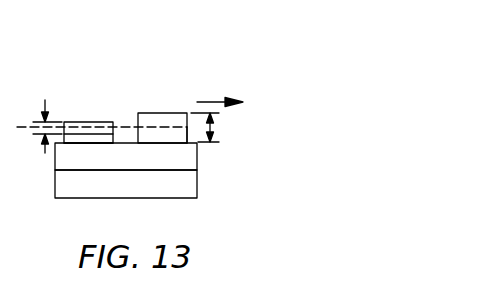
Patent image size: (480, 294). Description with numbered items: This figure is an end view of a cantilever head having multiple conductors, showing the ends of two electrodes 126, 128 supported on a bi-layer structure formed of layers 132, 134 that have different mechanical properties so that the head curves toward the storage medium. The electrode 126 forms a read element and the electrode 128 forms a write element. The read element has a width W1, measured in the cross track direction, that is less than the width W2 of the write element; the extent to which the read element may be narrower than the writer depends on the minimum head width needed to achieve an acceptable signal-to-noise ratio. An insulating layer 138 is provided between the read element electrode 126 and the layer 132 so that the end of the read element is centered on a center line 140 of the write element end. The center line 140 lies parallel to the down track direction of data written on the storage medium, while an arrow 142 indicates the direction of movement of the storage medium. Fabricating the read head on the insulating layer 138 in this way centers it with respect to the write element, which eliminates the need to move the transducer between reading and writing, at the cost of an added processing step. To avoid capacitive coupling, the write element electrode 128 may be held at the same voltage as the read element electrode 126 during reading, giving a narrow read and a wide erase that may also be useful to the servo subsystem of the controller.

The electrode 126 is at (87, 121).
The electrode 128 is at (162, 118).
The layer 132 is at (172, 165).
The layer 134 is at (155, 190).
The insulating layer 138 is at (82, 141).
The center line 140 is at (178, 128).
The arrow 142 is at (217, 98).
The width of read element W1 is at (41, 125).
The width of write element W2 is at (207, 122).